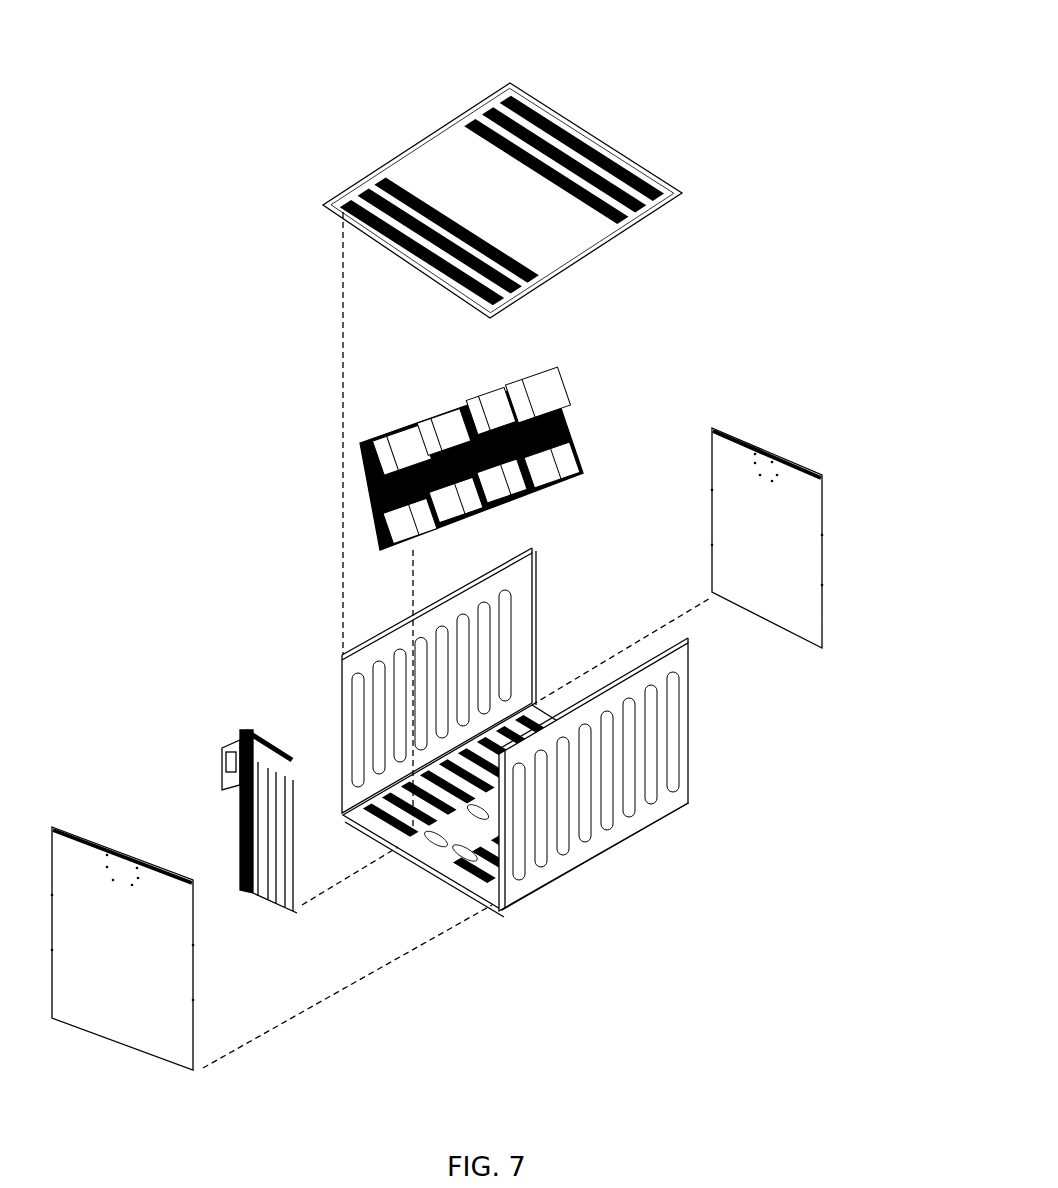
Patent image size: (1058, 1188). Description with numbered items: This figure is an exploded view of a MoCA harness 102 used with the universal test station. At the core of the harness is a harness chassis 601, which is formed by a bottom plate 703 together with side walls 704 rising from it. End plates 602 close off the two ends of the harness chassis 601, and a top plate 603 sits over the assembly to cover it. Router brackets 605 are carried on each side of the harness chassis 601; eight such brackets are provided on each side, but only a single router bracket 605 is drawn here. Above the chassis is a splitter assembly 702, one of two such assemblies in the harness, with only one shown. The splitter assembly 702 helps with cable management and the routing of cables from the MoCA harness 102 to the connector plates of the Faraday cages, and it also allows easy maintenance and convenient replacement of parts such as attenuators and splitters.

The MoCA harness 102 is at (726, 27).
The harness chassis 601 is at (708, 689).
The end plates 602 is at (822, 523).
The top plate 603 is at (652, 168).
The router bracket 605 is at (226, 728).
The splitter assembly 702 is at (577, 407).
The bottom plate 703 is at (426, 862).
The side walls 704 is at (520, 603).